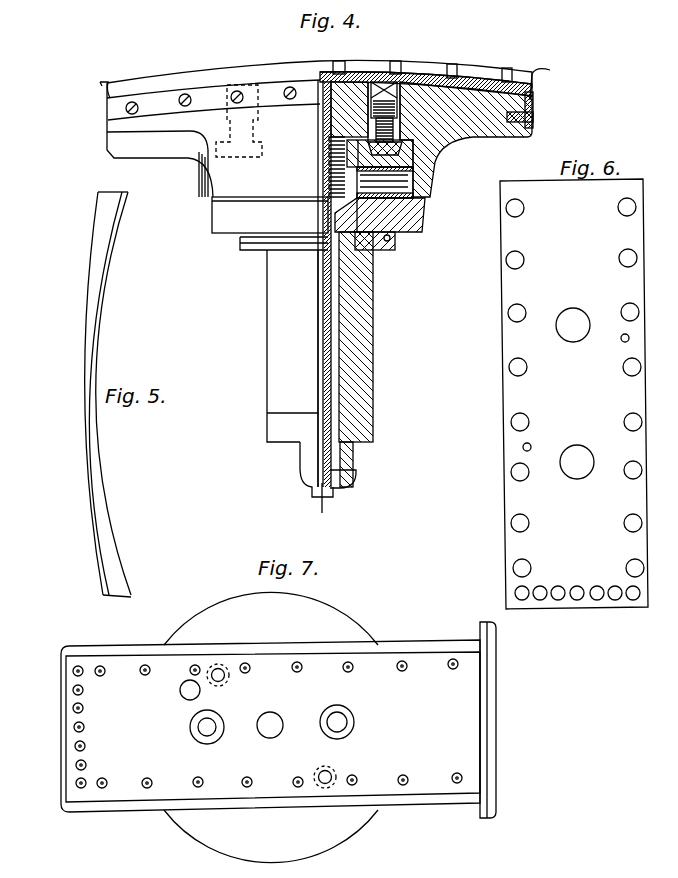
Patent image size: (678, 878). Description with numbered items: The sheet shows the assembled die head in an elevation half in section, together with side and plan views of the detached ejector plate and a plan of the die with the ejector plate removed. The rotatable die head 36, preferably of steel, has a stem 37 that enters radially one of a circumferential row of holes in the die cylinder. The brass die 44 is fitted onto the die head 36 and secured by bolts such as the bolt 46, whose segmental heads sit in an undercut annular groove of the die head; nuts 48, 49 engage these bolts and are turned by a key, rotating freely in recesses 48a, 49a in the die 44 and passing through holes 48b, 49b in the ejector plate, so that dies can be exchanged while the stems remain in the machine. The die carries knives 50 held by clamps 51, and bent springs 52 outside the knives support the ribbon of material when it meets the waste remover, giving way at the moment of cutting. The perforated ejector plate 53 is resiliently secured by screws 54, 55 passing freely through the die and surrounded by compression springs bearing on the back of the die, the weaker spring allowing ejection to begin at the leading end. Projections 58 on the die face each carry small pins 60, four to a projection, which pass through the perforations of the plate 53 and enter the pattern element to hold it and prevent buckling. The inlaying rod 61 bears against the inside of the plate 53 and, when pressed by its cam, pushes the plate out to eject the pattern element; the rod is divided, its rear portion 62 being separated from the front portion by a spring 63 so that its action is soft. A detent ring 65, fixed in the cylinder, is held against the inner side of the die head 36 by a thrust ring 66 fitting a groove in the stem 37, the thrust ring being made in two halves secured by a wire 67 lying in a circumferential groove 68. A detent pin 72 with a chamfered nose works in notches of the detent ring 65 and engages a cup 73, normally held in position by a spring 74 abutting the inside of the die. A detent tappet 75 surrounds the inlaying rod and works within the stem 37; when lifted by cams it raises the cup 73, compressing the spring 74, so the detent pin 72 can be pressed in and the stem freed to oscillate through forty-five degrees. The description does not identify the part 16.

In FIG. 4, the cylinder 16 is at (292, 444).
In FIG. 4, the die head 36 is at (420, 150).
In FIG. 4, the stem 37 is at (374, 328).
In FIG. 4, the die 44 is at (480, 120).
In FIG. 7, the die 44 is at (58, 768).
In FIG. 4, the bolt 46 is at (414, 162).
In FIG. 4, the nut 48 is at (228, 112).
In FIG. 7, the recess 48a is at (205, 725).
In FIG. 6, the hole 48b is at (577, 466).
In FIG. 4, the nut 49 is at (405, 92).
In FIG. 7, the recess 49a is at (340, 722).
In FIG. 6, the hole 49b is at (572, 322).
In FIG. 4, the knives 50 is at (247, 76).
In FIG. 4, the clamps 51 is at (110, 96).
In FIG. 4, the bent springs 52 is at (104, 82).
In FIG. 5, the ejector plate 53 is at (106, 272).
In FIG. 6, the ejector plate 53 is at (597, 600).
In FIG. 7, the screw 54 is at (322, 783).
In FIG. 7, the screw 55 is at (221, 669).
In FIG. 4, the projections 58 is at (505, 70).
In FIG. 7, the projections 58 is at (75, 727).
In FIG. 4, the pins 60 is at (341, 65).
In FIG. 7, the pins 60 is at (297, 663).
In FIG. 4, the inlaying rod 61 is at (326, 210).
In FIG. 4, the rear portion 62 is at (343, 456).
In FIG. 4, the spring 63 is at (317, 262).
In FIG. 4, the detent ring 65 is at (414, 205).
In FIG. 4, the thrust ring 66 is at (380, 251).
In FIG. 4, the wire 67 is at (389, 242).
In FIG. 4, the circumferential groove 68 is at (242, 244).
In FIG. 4, the detent pin 72 is at (415, 195).
In FIG. 4, the cup 73 is at (329, 191).
In FIG. 4, the spring 74 is at (329, 148).
In FIG. 4, the detent tappet 75 is at (349, 483).